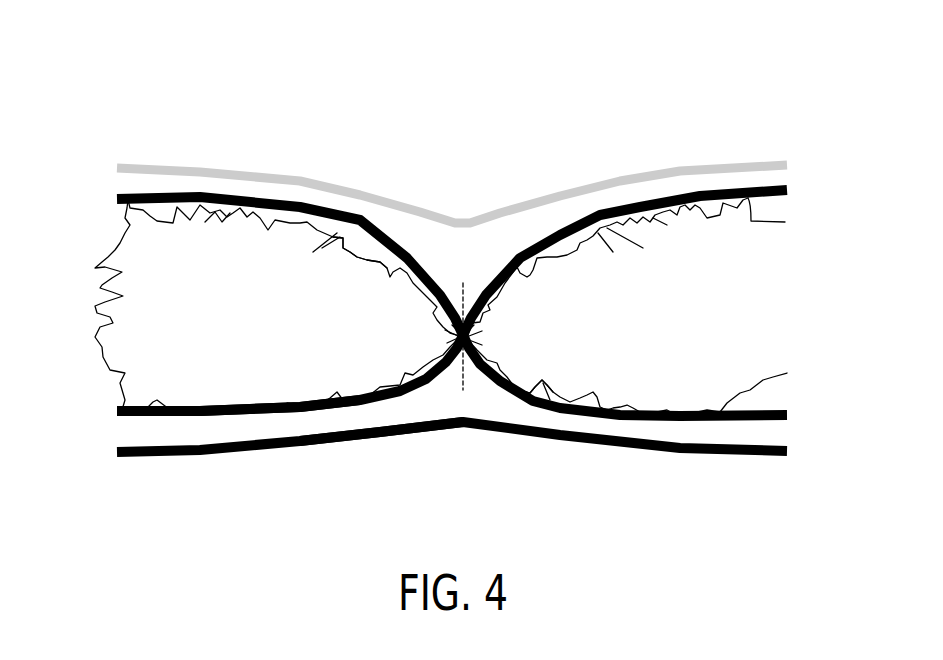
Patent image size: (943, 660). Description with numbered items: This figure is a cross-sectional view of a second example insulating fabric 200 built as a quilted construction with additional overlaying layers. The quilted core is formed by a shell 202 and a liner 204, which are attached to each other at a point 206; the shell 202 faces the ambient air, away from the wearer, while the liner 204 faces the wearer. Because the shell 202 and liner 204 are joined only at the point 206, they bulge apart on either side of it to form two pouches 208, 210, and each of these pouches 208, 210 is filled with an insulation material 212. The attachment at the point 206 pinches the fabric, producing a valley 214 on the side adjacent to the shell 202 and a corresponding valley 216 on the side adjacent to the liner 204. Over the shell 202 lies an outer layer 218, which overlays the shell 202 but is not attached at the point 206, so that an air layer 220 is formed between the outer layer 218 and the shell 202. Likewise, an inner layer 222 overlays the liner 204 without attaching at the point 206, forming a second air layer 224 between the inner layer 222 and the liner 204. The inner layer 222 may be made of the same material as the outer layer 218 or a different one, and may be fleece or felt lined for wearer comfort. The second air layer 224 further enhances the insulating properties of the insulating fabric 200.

The insulating fabric 200 is at (412, 293).
The shell 202 is at (123, 199).
The liner 204 is at (120, 411).
The point 206 is at (458, 398).
The pouch 208 is at (358, 254).
The pouch 210 is at (548, 396).
The insulation material 212 is at (243, 375).
The valley 214 is at (453, 255).
The valley 216 is at (477, 397).
The outer layer 218 is at (258, 166).
The air layer 220 is at (597, 200).
The inner layer 222 is at (140, 457).
The second air layer 224 is at (345, 422).